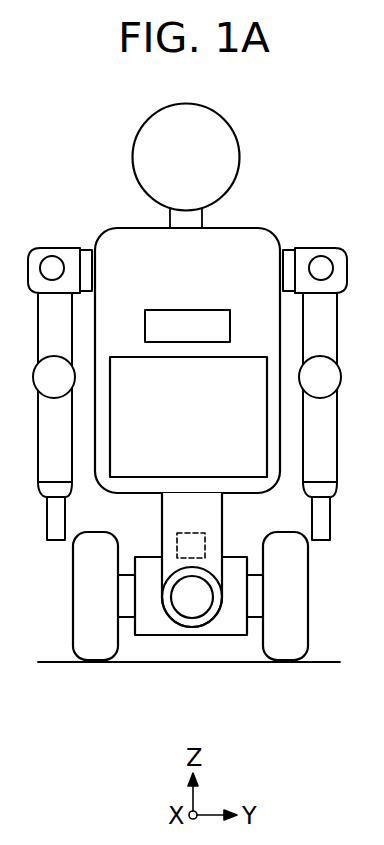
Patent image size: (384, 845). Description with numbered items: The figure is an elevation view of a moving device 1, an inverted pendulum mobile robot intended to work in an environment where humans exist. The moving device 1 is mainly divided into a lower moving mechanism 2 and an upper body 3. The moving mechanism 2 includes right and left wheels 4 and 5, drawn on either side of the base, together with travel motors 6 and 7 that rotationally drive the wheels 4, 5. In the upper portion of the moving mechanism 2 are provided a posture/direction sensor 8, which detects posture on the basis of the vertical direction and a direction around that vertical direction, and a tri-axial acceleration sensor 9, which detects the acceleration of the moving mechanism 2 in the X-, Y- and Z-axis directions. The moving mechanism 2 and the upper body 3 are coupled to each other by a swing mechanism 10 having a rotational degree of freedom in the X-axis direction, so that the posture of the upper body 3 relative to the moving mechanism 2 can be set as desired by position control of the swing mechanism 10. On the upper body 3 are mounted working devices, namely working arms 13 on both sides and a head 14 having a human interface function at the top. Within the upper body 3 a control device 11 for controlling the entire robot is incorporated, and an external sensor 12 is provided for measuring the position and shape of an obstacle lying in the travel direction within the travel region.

The moving device 1 is at (130, 242).
The moving mechanism 2 is at (152, 620).
The upper body 3 is at (238, 240).
The wheel 4 is at (83, 608).
The wheel 5 is at (297, 610).
The travel motor 6 is at (127, 607).
The travel motor 7 is at (253, 608).
The posture/direction sensor 8 is at (177, 534).
The tri-axial acceleration sensor 9 is at (202, 546).
The swing mechanism 10 is at (190, 596).
The control device 11 is at (245, 417).
The external sensor 12 is at (220, 325).
The working arm 13 is at (63, 248).
The head 14 is at (143, 147).